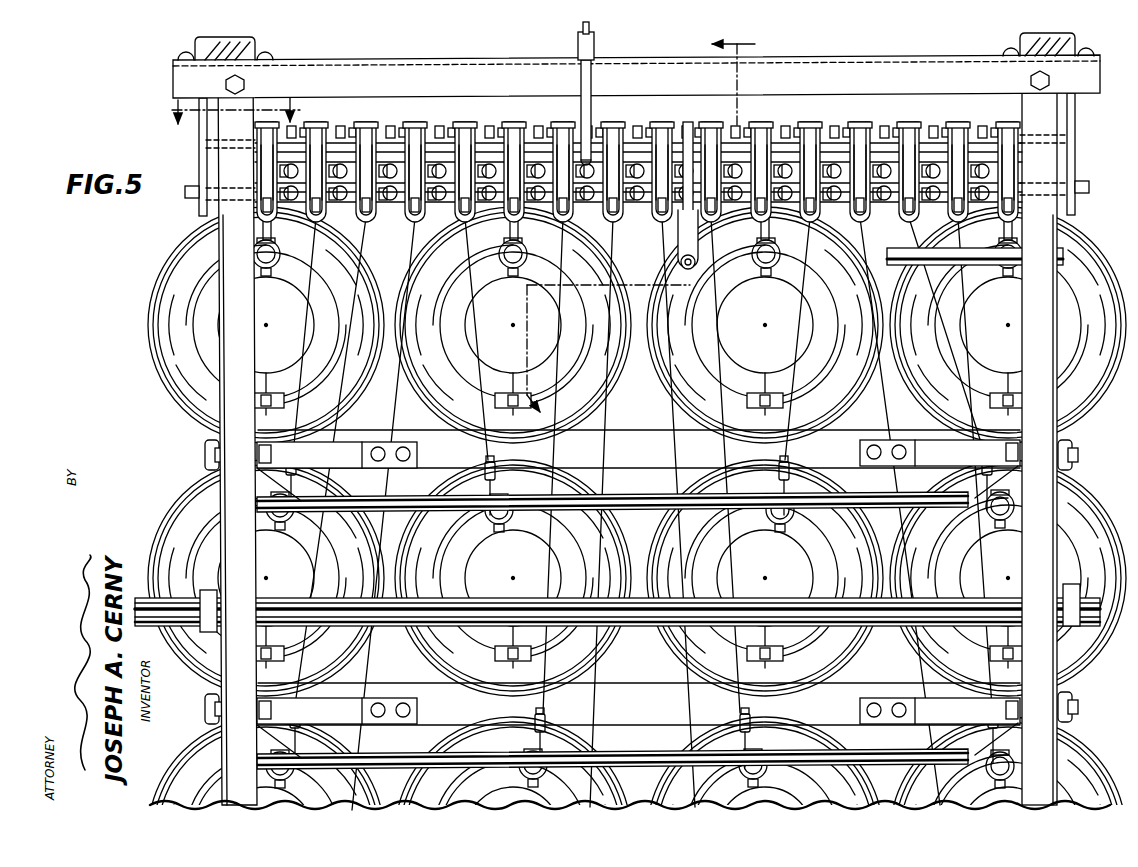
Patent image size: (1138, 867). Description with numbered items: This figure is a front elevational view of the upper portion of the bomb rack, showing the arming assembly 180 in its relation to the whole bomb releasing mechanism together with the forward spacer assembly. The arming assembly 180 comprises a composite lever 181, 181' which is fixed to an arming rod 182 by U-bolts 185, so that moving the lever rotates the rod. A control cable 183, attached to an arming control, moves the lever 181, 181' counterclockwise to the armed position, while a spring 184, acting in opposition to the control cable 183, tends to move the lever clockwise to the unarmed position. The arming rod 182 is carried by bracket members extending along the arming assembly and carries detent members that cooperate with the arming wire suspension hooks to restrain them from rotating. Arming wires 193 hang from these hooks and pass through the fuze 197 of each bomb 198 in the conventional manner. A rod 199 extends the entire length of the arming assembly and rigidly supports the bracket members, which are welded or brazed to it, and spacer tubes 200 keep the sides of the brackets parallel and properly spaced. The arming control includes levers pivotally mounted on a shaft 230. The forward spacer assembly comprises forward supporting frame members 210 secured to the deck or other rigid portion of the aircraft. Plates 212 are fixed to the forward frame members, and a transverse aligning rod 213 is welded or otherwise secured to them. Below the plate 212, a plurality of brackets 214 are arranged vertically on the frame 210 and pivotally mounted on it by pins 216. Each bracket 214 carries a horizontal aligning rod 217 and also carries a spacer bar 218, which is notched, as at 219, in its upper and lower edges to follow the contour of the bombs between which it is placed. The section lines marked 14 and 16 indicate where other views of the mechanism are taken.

The section line 14 is at (644, 229).
The section line 16 is at (233, 112).
The arming assembly 180 is at (250, 168).
The composite lever 181 is at (616, 46).
The composite lever 181' is at (658, 239).
The arming rod 182 is at (775, 130).
The control cable 183 is at (577, 40).
The spring 184 is at (680, 264).
The U-bolts 185 is at (585, 98).
The arming wires 193 is at (465, 352).
The fuze 197 is at (275, 297).
The bomb 198 is at (172, 305).
The rod 199 is at (660, 232).
The spacer tubes 200 is at (856, 219).
The forward supporting frame members 210 is at (240, 375).
The plates 212 is at (177, 253).
The transverse aligning rod 213 is at (1065, 257).
The brackets 214 is at (343, 450).
The pins 216 is at (215, 462).
The horizontal aligning rod 217 is at (900, 508).
The spacer bar 218 is at (620, 442).
The notches 219 is at (528, 441).
The shaft 230 is at (900, 130).